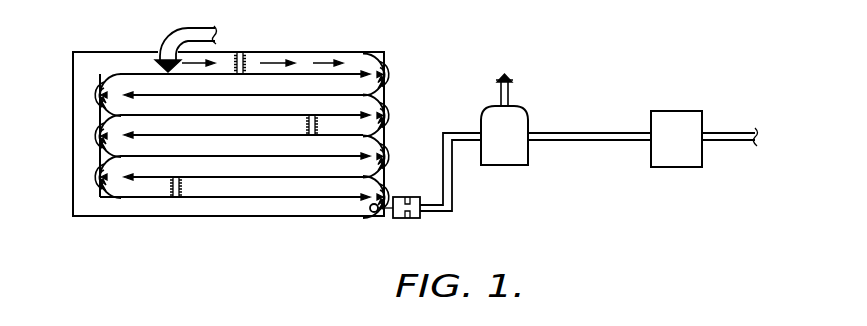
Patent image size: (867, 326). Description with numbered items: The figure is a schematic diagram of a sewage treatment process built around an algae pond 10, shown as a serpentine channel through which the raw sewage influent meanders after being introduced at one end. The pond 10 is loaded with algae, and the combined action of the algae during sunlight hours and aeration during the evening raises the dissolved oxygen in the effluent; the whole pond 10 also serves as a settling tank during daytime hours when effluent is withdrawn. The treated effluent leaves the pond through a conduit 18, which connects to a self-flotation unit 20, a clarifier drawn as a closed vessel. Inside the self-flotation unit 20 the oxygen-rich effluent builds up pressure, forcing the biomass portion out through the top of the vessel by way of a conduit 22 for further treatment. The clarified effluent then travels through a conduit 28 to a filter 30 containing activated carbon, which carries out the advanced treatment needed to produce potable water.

The algae pond 10 is at (155, 197).
The conduit 18 is at (452, 133).
The self-flotation unit 20 is at (488, 106).
The conduit 22 is at (512, 93).
The conduit 28 is at (613, 133).
The filter 30 is at (677, 111).